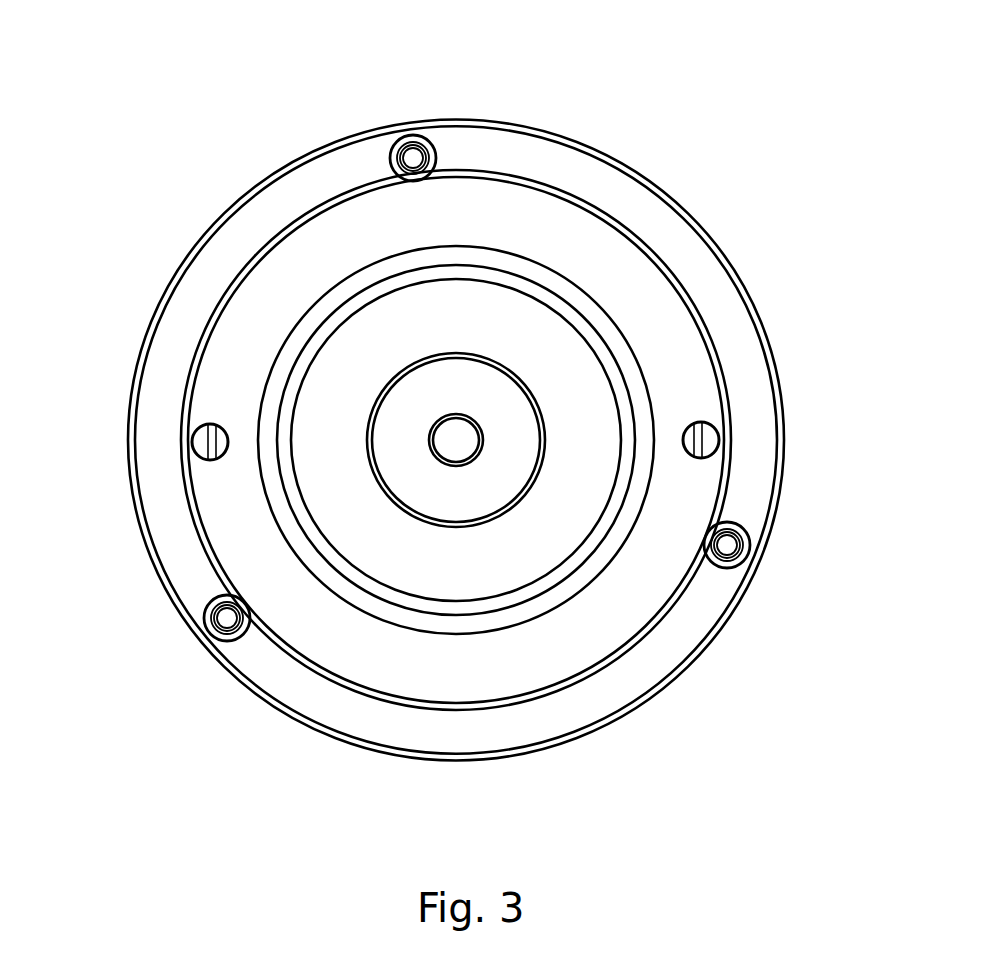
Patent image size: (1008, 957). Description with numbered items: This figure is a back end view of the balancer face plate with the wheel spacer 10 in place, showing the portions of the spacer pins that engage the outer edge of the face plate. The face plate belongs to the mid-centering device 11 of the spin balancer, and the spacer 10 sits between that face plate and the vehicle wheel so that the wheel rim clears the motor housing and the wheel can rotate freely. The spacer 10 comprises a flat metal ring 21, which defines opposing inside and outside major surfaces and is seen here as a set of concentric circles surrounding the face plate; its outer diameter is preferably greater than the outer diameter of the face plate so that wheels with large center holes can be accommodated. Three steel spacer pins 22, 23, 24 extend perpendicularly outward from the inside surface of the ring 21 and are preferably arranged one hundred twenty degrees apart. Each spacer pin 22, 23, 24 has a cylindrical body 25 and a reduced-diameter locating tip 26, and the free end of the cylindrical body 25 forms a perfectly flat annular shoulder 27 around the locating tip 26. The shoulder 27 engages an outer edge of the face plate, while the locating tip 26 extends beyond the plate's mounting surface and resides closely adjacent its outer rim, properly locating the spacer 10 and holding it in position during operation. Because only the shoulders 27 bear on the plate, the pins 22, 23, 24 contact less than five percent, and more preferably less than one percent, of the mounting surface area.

The spacer 10 is at (183, 201).
The mid-centering device 11 is at (638, 273).
The flat metal ring 21 is at (575, 173).
The spacer pin 22 is at (241, 659).
The spacer pin 23 is at (386, 128).
The spacer pin 24 is at (750, 511).
The cylindrical body 25 is at (413, 158).
The locating tip 26 is at (397, 160).
The annular shoulder 27 is at (432, 158).